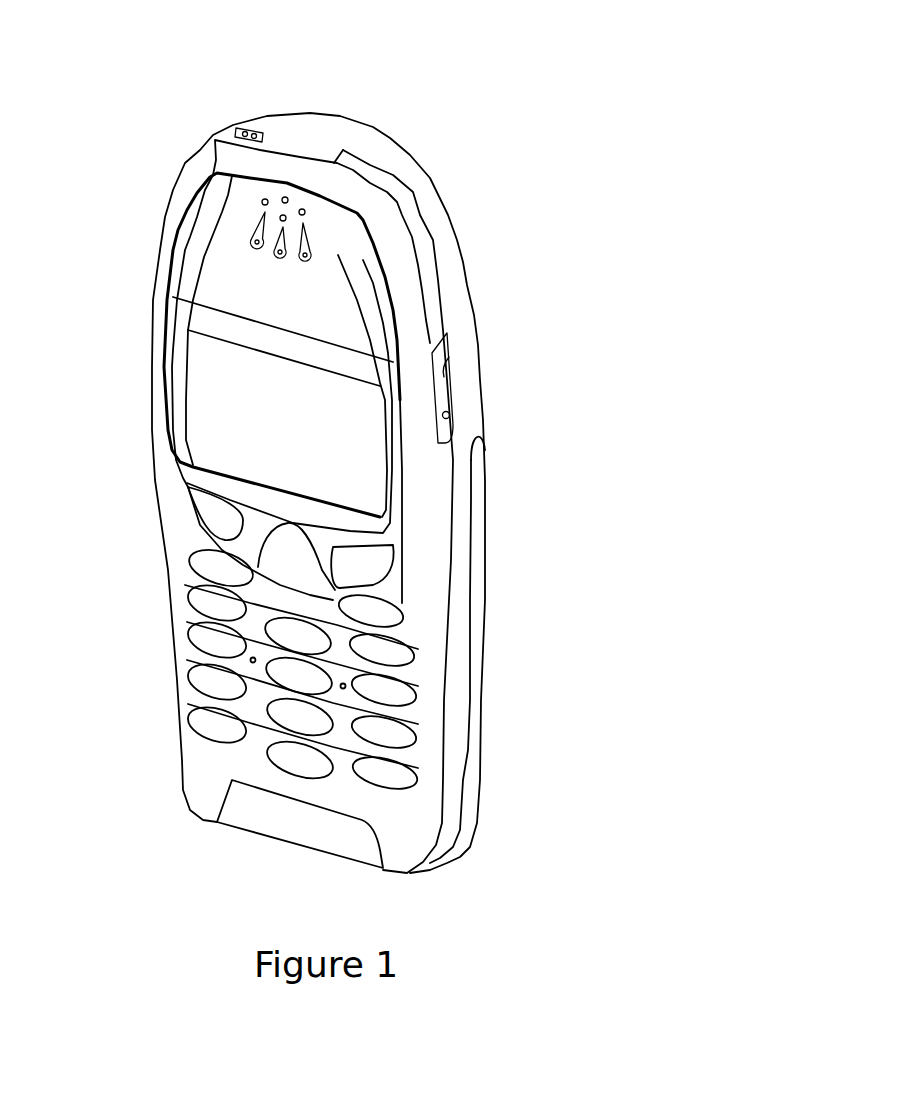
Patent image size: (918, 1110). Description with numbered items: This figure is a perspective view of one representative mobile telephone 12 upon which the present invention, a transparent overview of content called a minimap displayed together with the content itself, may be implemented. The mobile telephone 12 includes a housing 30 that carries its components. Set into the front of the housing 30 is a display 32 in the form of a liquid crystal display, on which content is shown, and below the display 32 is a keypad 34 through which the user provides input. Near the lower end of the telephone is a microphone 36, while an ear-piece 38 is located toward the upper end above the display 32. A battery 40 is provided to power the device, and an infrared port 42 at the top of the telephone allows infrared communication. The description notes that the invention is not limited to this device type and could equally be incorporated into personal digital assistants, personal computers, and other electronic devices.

The mobile telephone 12 is at (510, 205).
The housing 30 is at (460, 293).
The display 32 is at (367, 435).
The keypad 34 is at (462, 829).
The microphone 36 is at (275, 808).
The ear-piece 38 is at (270, 230).
The battery 40 is at (473, 752).
The infrared port 42 is at (307, 152).